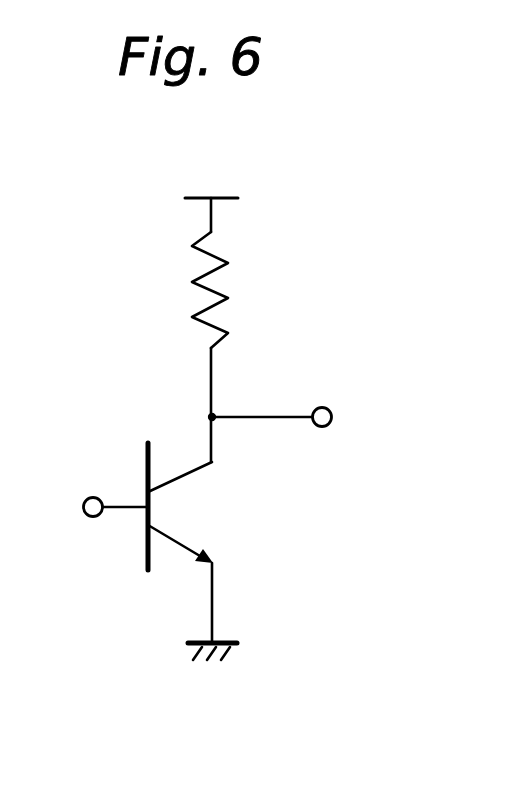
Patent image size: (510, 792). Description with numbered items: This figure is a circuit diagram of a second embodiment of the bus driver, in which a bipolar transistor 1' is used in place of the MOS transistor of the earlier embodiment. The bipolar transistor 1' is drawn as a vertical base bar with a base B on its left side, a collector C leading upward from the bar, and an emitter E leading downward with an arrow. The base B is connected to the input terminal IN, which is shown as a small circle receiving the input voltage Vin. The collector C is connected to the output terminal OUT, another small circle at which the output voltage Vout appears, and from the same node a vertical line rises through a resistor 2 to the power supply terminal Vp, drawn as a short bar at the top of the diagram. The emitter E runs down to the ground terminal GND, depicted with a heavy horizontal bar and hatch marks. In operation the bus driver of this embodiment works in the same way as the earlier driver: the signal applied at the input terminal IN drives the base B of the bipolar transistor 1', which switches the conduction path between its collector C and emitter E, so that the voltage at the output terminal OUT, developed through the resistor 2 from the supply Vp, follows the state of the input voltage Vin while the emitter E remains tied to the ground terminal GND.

The resistor 2 is at (217, 293).
The bipolar transistor 1' is at (157, 521).
The power supply terminal Vp is at (211, 195).
The output terminal OUT is at (322, 407).
The output voltage Vout is at (307, 418).
The collector C is at (195, 473).
The emitter E is at (194, 552).
The base B is at (125, 491).
The input terminal IN is at (93, 497).
The input voltage Vin is at (55, 506).
The ground terminal GND is at (215, 631).